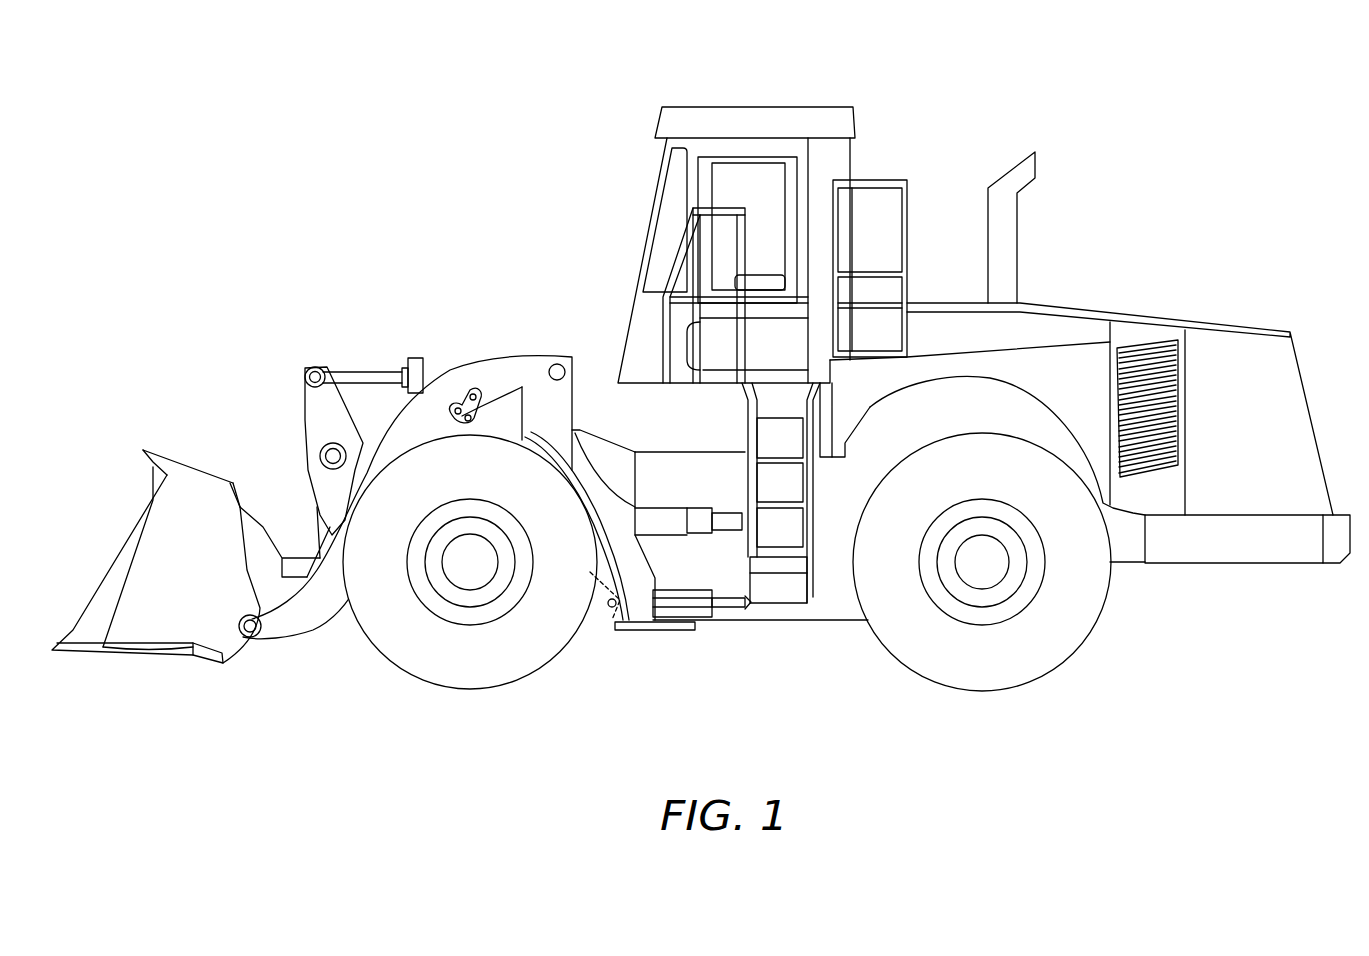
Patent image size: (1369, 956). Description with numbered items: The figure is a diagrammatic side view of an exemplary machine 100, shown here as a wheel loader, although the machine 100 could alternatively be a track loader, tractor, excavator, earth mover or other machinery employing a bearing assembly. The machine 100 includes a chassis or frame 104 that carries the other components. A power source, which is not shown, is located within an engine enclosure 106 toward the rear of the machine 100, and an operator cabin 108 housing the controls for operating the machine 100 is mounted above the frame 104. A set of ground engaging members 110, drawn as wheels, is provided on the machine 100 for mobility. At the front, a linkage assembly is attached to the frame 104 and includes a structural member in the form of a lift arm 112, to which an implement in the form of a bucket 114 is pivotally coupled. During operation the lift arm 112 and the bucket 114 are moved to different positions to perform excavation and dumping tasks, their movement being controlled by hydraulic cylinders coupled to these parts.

The machine 100 is at (701, 400).
The frame 104 is at (783, 627).
The engine enclosure 106 is at (1160, 315).
The operator cabin 108 is at (757, 107).
The ground engaging members 110 is at (470, 689).
The lift arm 112 is at (303, 627).
The bucket 114 is at (200, 594).